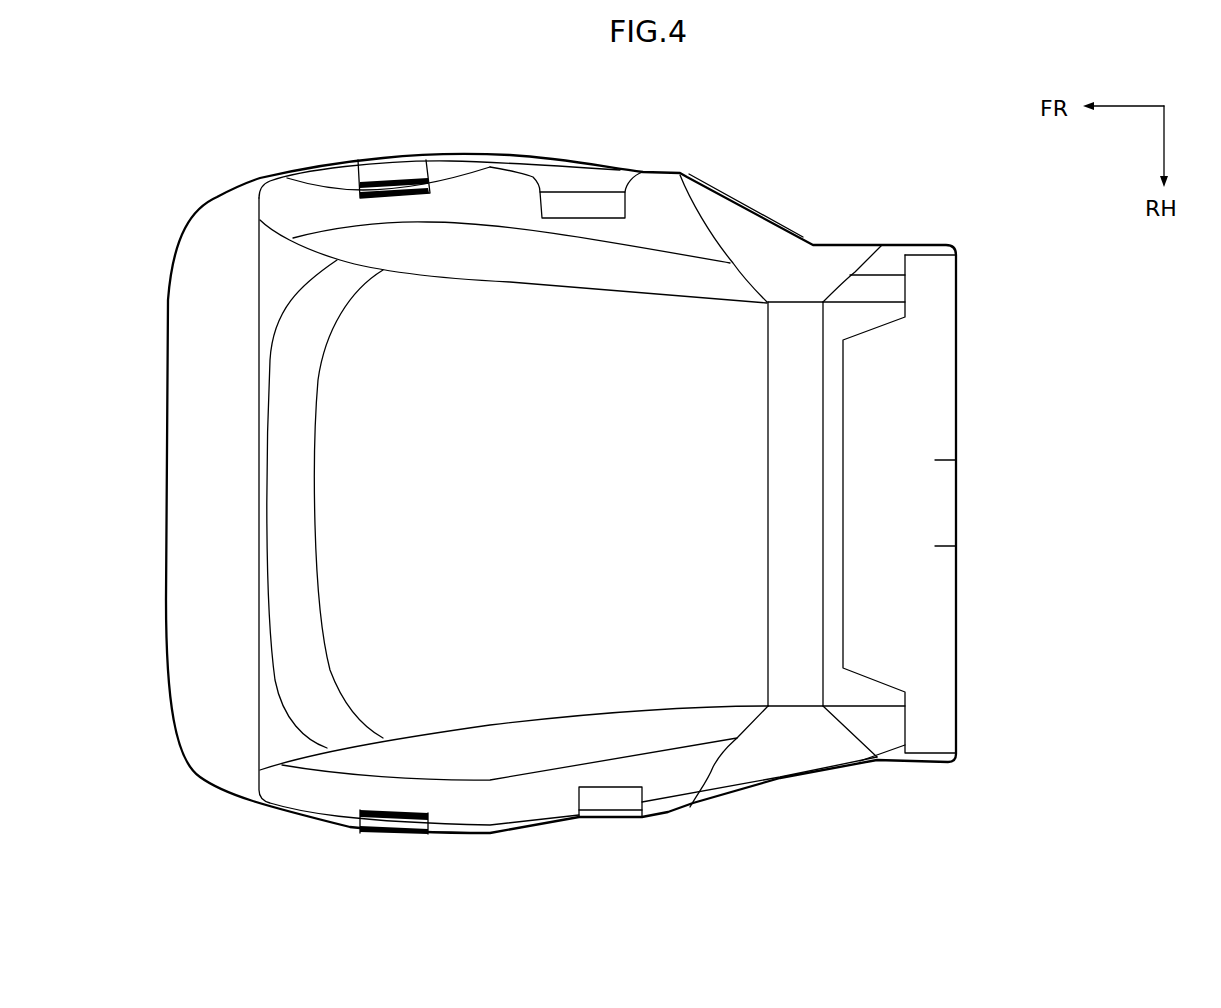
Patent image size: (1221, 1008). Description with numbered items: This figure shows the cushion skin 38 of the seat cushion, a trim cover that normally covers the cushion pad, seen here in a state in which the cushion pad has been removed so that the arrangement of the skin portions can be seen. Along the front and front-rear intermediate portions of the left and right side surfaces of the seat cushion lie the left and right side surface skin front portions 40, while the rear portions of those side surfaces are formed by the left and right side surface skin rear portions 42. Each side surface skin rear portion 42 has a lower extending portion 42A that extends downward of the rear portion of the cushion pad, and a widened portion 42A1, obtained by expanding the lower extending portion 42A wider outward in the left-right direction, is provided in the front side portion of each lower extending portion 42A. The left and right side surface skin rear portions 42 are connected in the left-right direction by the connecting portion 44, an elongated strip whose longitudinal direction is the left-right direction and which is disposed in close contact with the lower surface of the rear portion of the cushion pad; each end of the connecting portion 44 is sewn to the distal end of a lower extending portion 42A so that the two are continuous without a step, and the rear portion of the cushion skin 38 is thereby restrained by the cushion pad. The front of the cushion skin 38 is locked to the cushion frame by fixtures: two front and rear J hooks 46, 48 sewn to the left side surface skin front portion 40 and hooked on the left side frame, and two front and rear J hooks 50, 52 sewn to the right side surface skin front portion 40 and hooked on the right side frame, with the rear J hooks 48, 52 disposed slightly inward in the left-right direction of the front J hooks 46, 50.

The cushion skin 38 is at (210, 196).
The side surface skin front portion 40 is at (507, 157).
The side surface skin rear portion 42 is at (878, 247).
The lower extending portion 42A is at (797, 268).
The widened portion 42A1 is at (740, 210).
The connecting portion 44 is at (807, 484).
The J hook 46 is at (393, 180).
The J hook 48 is at (596, 210).
The J hook 50 is at (397, 834).
The J hook 52 is at (608, 795).